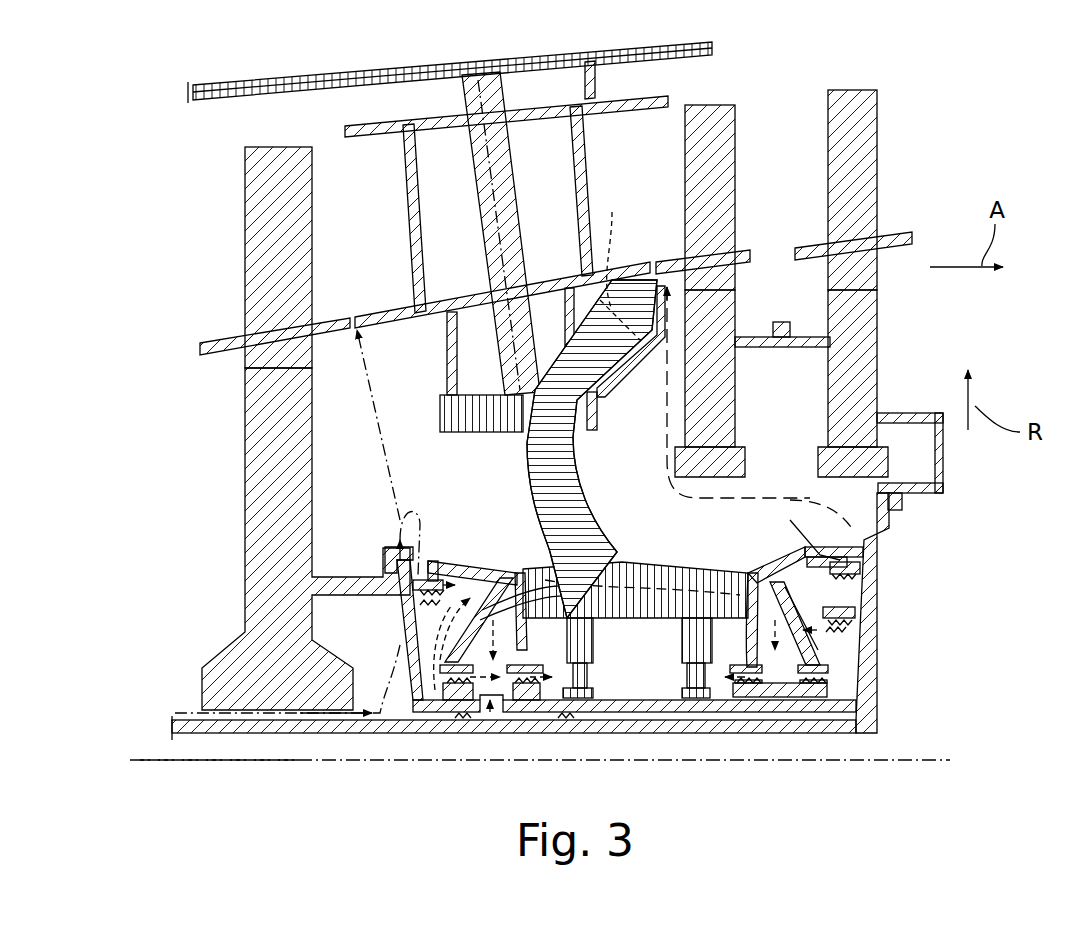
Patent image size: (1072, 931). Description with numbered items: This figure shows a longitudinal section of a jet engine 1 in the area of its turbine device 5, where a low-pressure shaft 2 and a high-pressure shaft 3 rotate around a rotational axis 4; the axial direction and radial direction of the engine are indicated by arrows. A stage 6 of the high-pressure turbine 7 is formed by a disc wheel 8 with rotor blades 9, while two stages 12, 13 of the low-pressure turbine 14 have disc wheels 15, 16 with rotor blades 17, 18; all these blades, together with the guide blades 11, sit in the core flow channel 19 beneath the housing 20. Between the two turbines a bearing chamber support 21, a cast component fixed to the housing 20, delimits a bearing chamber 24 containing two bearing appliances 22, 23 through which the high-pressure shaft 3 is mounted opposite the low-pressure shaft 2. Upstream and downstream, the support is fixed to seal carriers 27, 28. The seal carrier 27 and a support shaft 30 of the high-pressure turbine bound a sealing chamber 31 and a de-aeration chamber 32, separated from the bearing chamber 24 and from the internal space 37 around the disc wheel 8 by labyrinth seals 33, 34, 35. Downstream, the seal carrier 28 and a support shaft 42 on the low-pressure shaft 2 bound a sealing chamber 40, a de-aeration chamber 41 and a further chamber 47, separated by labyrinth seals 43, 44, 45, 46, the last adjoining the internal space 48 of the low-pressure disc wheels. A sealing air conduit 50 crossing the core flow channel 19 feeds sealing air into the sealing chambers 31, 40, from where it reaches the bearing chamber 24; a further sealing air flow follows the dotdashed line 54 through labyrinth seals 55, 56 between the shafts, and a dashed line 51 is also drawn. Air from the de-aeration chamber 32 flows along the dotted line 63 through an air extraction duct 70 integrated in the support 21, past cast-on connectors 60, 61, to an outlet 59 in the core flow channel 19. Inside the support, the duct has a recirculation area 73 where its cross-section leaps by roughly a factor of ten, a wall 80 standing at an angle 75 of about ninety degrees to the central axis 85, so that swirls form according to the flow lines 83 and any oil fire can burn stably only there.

The jet engine 1 is at (82, 110).
The low-pressure shaft 2 is at (727, 612).
The high-pressure shaft 3 is at (327, 685).
The rotational axis 4 is at (142, 758).
The turbine device 5 is at (235, 257).
The stage of the high-pressure turbine 6 is at (240, 284).
The high-pressure turbine 7 is at (284, 539).
The disc wheel 8 is at (258, 466).
The rotor blade 9 is at (247, 257).
The guide blade 11 is at (408, 200).
The stage of the low-pressure turbine 12 is at (747, 291).
The stage of the low-pressure turbine 13 is at (895, 190).
The low-pressure turbine 14 is at (891, 383).
The disc wheel 15 is at (742, 380).
The disc wheel 16 is at (858, 355).
The rotor blade 17 is at (725, 150).
The rotor blade 18 is at (852, 115).
The core flow channel 19 is at (372, 276).
The housing 20 is at (213, 88).
The bearing chamber support 21 is at (512, 440).
The bearing appliance 22 is at (590, 668).
The bearing appliance 23 is at (700, 668).
The bearing chamber 24 is at (625, 716).
The seal carrier 27 is at (470, 562).
The seal carrier 28 is at (822, 548).
The support shaft 30 is at (400, 632).
The sealing chamber 31 is at (524, 744).
The de-aeration chamber 32 is at (397, 703).
The labyrinth seal 33 is at (513, 712).
The labyrinth seal 34 is at (453, 744).
The labyrinth seal 35 is at (438, 580).
The internal space 37 is at (378, 503).
The sealing chamber 40 is at (801, 696).
The de-aeration chamber 41 is at (837, 696).
The support shaft 42 is at (846, 623).
The labyrinth seal 43 is at (742, 700).
The labyrinth seal 44 is at (820, 700).
The labyrinth seal 45 is at (901, 613).
The labyrinth seal 46 is at (876, 583).
The further chamber 47 is at (855, 530).
The internal space 48 is at (648, 508).
The sealing air conduit 50 is at (518, 233).
The dashed line 51 is at (483, 132).
The dotdashed line 54 is at (280, 735).
The labyrinth seal 55 is at (437, 703).
The labyrinth seal 56 is at (560, 716).
The outlet 59 is at (652, 268).
The connector 60 is at (445, 697).
The connector 61 is at (585, 366).
The dotted line 63 is at (618, 264).
The air extraction duct 70 is at (592, 403).
The recirculation area 73 is at (562, 589).
The angle 75 is at (603, 654).
The wall 80 is at (499, 656).
The flow line 83 is at (600, 572).
The central axis 85 is at (567, 582).